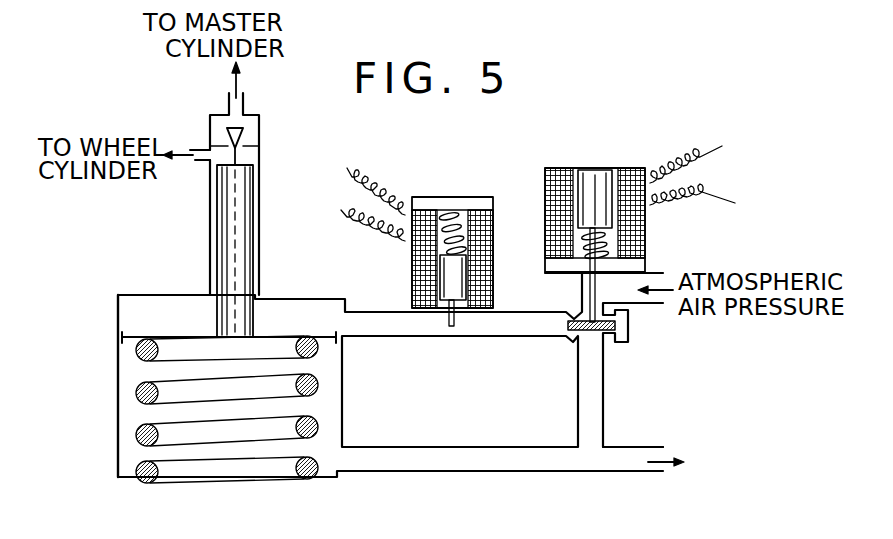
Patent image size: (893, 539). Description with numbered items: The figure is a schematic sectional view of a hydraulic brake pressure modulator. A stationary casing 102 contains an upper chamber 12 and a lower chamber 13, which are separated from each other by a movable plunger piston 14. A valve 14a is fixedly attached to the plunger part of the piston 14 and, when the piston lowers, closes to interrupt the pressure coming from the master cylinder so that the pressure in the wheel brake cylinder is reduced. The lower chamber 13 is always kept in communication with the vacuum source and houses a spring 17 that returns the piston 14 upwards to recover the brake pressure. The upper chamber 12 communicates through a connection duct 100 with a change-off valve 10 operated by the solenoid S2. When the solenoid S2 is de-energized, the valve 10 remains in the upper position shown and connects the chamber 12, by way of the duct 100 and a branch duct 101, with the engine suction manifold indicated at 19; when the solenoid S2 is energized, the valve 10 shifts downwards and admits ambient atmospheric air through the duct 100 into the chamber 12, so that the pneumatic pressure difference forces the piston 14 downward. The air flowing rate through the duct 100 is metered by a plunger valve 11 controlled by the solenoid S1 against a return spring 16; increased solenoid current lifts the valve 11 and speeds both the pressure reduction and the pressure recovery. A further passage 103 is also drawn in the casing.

The change-off valve 10 is at (580, 340).
The plunger valve 11 is at (448, 320).
The chamber 12 is at (160, 305).
The chamber 13 is at (215, 410).
The plunger piston 14 is at (238, 232).
The valve 14a is at (244, 127).
The return spring 16 is at (452, 208).
The spring 17 is at (140, 393).
The engine suction manifold 19 is at (660, 464).
The connection duct 100 is at (502, 334).
The branch duct 101 is at (593, 388).
The stationary casing 102 is at (116, 456).
The passage 103 is at (432, 468).
The solenoid S1 is at (402, 289).
The solenoid S2 is at (567, 167).